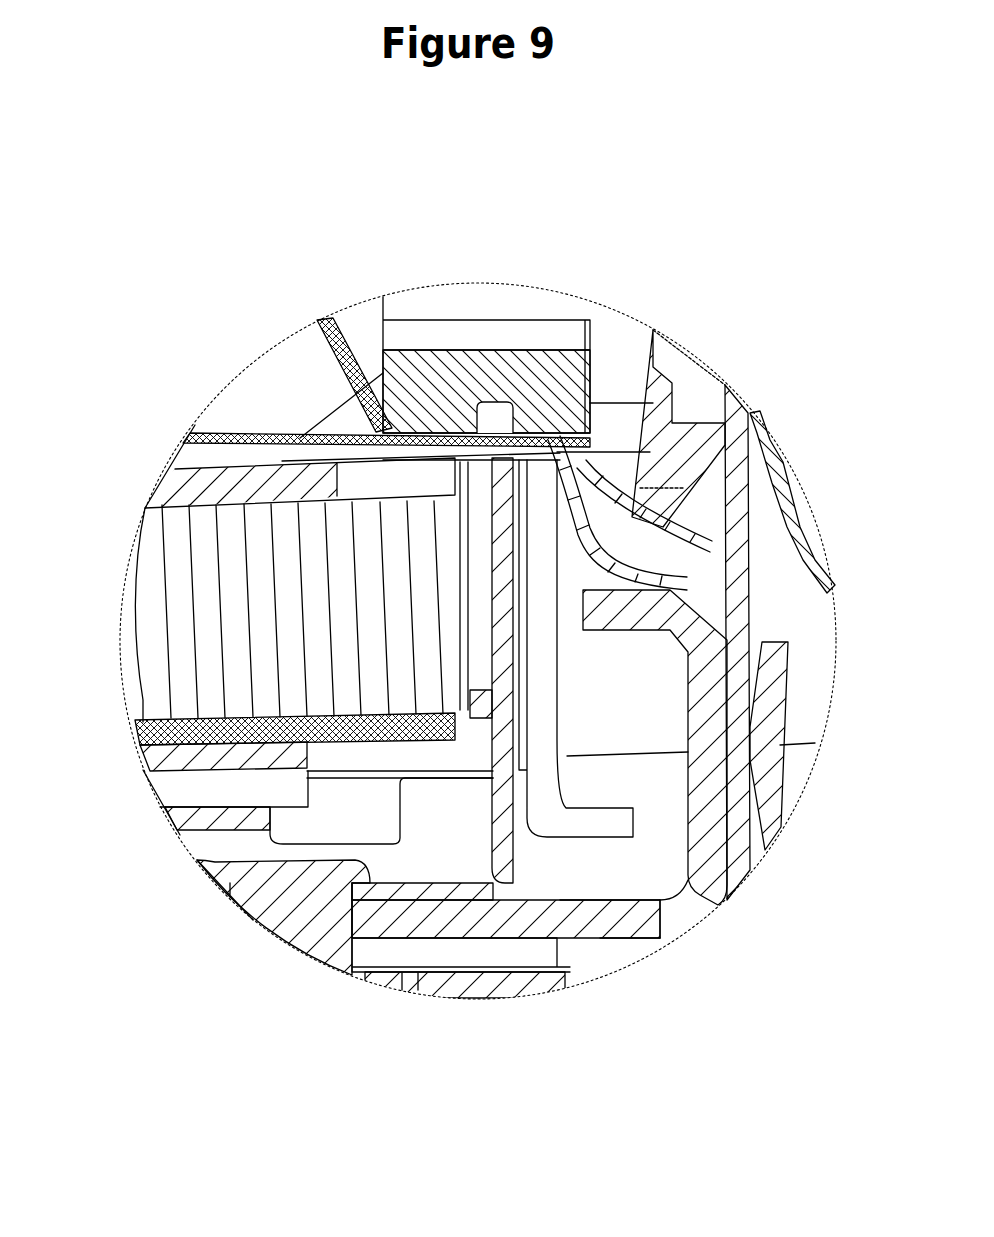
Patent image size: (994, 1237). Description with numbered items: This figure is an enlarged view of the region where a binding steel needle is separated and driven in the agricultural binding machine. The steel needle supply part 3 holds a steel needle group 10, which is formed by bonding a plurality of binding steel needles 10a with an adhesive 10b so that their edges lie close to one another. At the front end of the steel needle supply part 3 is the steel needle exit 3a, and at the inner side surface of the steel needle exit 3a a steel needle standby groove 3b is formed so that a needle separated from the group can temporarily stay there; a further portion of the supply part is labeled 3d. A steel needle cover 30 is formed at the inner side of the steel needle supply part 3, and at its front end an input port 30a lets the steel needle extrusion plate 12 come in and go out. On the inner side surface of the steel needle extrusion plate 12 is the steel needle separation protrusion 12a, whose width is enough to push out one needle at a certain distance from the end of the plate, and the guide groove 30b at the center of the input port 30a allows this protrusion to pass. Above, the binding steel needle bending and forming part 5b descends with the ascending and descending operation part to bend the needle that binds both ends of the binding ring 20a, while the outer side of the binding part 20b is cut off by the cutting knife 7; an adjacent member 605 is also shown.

The steel needle supply part 3 is at (193, 483).
The steel needle exit 3a is at (467, 497).
The steel needle standby groove 3b is at (413, 390).
The bobbin thin wall 3d is at (313, 403).
The binding steel needle bending and forming part 5b is at (560, 380).
The cutting knife 7 is at (740, 610).
The steel needle group 10 is at (128, 848).
The binding steel needle 10a is at (130, 717).
The adhesive 10b is at (143, 773).
The steel needle extrusion plate 12 is at (520, 647).
The steel needle separation protrusion 12a is at (520, 733).
The binding ring 20a is at (333, 356).
The binding part 20b is at (670, 375).
The steel needle cover 30 is at (247, 757).
The input port 30a is at (575, 890).
The guide groove 30b is at (490, 778).
The outer casing 605 is at (750, 413).